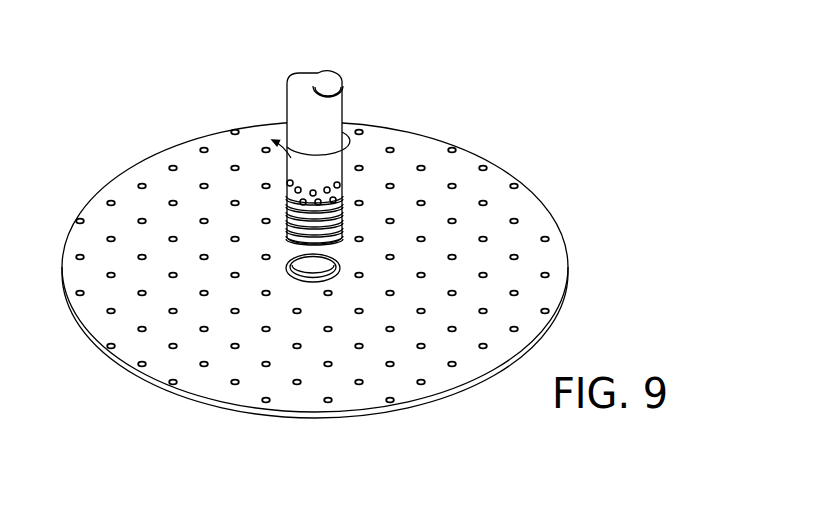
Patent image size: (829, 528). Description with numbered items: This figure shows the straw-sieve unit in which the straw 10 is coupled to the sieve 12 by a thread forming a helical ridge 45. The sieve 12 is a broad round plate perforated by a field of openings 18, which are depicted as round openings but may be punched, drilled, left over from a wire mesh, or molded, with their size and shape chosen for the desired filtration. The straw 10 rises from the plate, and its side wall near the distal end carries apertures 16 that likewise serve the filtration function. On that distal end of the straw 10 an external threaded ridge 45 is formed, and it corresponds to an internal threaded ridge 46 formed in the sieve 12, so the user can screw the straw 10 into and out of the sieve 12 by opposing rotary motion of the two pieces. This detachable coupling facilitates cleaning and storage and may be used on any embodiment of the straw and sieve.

The straw 10 is at (335, 158).
The sieve 12 is at (561, 228).
The apertures 16 is at (330, 186).
The openings 18 is at (513, 175).
The helical ridge 45 is at (343, 208).
The internal threaded ridge 46 is at (331, 262).